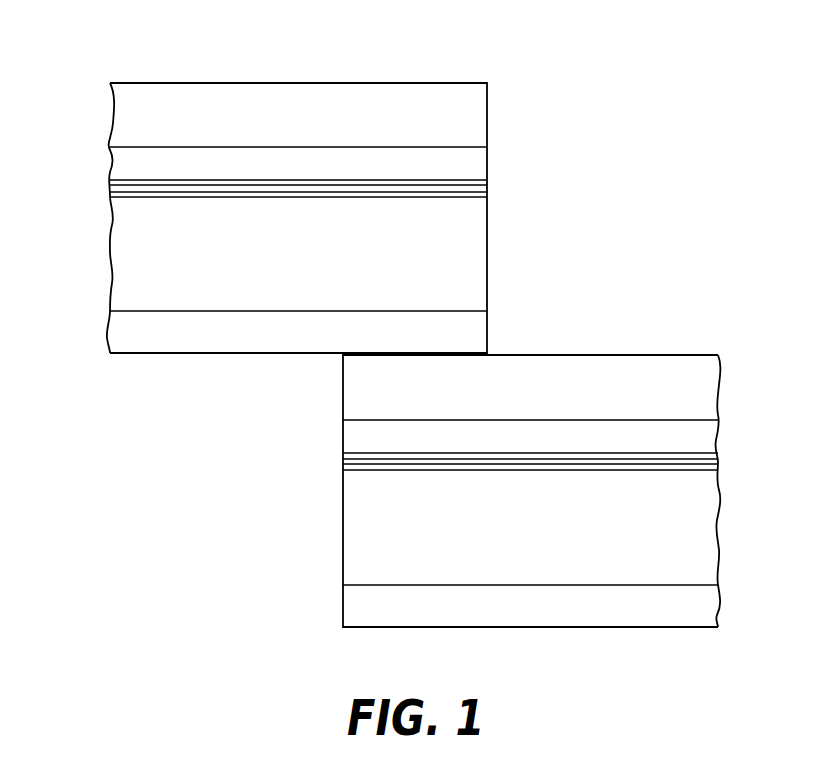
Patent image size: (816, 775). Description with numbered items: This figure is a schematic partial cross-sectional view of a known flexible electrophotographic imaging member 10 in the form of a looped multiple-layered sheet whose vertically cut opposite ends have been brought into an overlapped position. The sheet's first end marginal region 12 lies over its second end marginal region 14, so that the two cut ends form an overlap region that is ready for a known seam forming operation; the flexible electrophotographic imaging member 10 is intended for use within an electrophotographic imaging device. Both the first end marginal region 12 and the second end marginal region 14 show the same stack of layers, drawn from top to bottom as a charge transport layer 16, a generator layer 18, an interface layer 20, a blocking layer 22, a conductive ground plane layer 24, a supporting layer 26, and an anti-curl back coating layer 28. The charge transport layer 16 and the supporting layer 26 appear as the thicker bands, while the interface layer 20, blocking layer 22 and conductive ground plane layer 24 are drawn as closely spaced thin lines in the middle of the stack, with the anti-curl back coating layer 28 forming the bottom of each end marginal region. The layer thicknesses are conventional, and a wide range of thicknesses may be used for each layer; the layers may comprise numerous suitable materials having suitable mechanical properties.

The flexible electrophotographic imaging member 10 is at (579, 135).
The first end marginal region 12 is at (411, 70).
The second end marginal region 14 is at (497, 635).
The charge transport layer 16 is at (118, 106).
The generator layer 18 is at (118, 152).
The interface layer 20 is at (110, 181).
The blocking layer 22 is at (110, 190).
The conductive ground plane layer 24 is at (110, 194).
The supporting layer 26 is at (116, 253).
The anti-curl back coating layer 28 is at (116, 327).